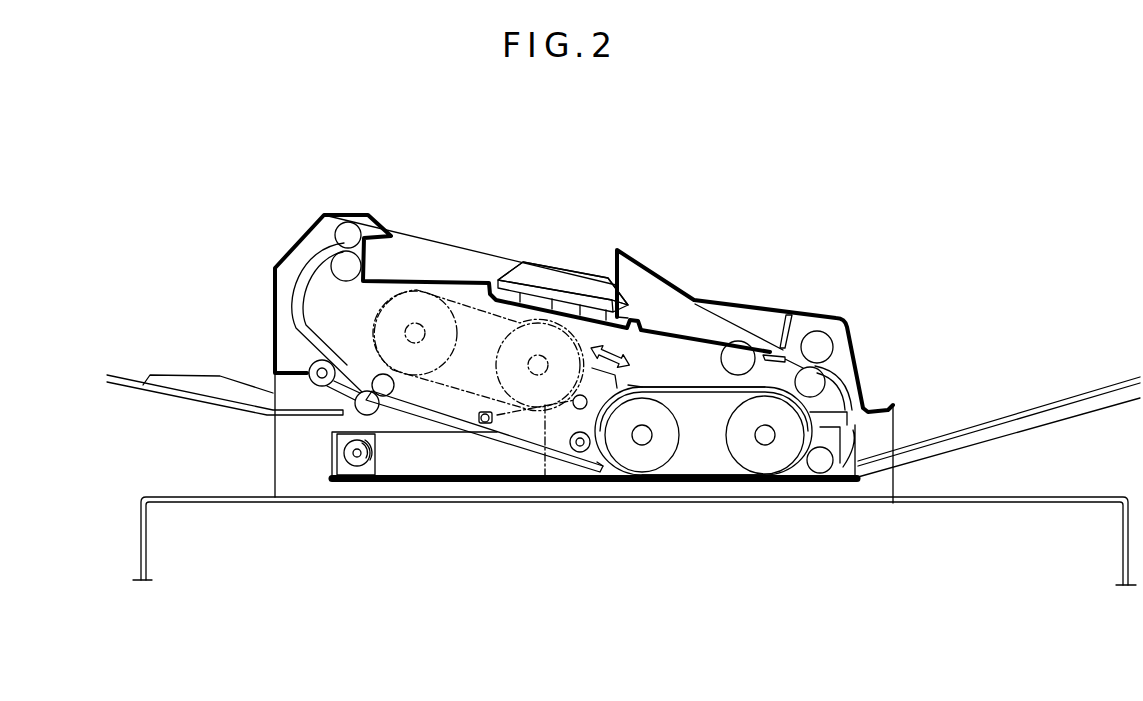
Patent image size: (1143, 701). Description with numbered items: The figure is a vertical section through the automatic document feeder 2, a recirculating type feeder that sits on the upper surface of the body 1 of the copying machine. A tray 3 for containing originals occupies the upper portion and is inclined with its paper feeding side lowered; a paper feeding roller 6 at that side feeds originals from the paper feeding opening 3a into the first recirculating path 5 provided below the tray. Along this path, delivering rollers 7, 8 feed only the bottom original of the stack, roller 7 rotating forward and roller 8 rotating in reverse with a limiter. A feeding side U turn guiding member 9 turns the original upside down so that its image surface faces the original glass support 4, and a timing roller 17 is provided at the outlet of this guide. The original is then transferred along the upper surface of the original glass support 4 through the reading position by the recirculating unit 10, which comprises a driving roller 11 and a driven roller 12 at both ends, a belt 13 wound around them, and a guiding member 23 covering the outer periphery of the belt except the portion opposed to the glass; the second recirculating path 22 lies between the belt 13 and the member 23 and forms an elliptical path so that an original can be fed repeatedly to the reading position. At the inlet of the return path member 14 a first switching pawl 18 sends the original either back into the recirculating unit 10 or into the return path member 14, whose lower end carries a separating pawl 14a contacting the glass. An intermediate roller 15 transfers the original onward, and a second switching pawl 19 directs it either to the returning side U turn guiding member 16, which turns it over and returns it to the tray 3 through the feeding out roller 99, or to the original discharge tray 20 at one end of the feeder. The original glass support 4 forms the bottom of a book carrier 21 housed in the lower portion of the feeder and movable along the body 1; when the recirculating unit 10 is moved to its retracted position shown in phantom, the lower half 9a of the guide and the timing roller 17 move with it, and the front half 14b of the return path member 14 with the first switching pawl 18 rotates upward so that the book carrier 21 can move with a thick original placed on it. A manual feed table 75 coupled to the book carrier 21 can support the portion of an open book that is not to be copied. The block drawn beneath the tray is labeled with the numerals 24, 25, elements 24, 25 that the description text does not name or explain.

The body of the copying machine 1 is at (138, 549).
The automatic document feeder 2 is at (403, 211).
The tray 3 is at (448, 282).
The paper feeding opening 3a is at (782, 338).
The original glass support 4 is at (674, 485).
The first recirculating path 5 is at (505, 441).
The paper feeding roller 6 is at (738, 353).
The delivering roller 7 is at (853, 367).
The delivering roller 8 is at (816, 345).
The feeding side U turn guiding member 9 is at (865, 387).
The lower half of the U turn guiding member 9a is at (895, 430).
The recirculating unit 10 is at (392, 322).
The driving roller 11 is at (640, 460).
The driven roller 12 is at (768, 460).
The belt 13 is at (693, 398).
The return path member 14 is at (452, 413).
The separating pawl 14a is at (604, 463).
The front half of the return path member 14b is at (551, 446).
The intermediate roller 15 is at (372, 400).
The returning side U turn guiding member 16 is at (298, 318).
The timing roller 17 is at (816, 470).
The first switching pawl 18 is at (581, 410).
The second switching pawl 19 is at (362, 390).
The original discharge tray 20 is at (186, 394).
The book carrier 21 is at (432, 489).
The second recirculating path 22 is at (683, 455).
The guiding member 23 is at (718, 386).
The fixing unit 24 is at (553, 280).
The heater 25 is at (563, 283).
The manual feed table 75 is at (1033, 422).
The feeding out roller 99 is at (338, 238).